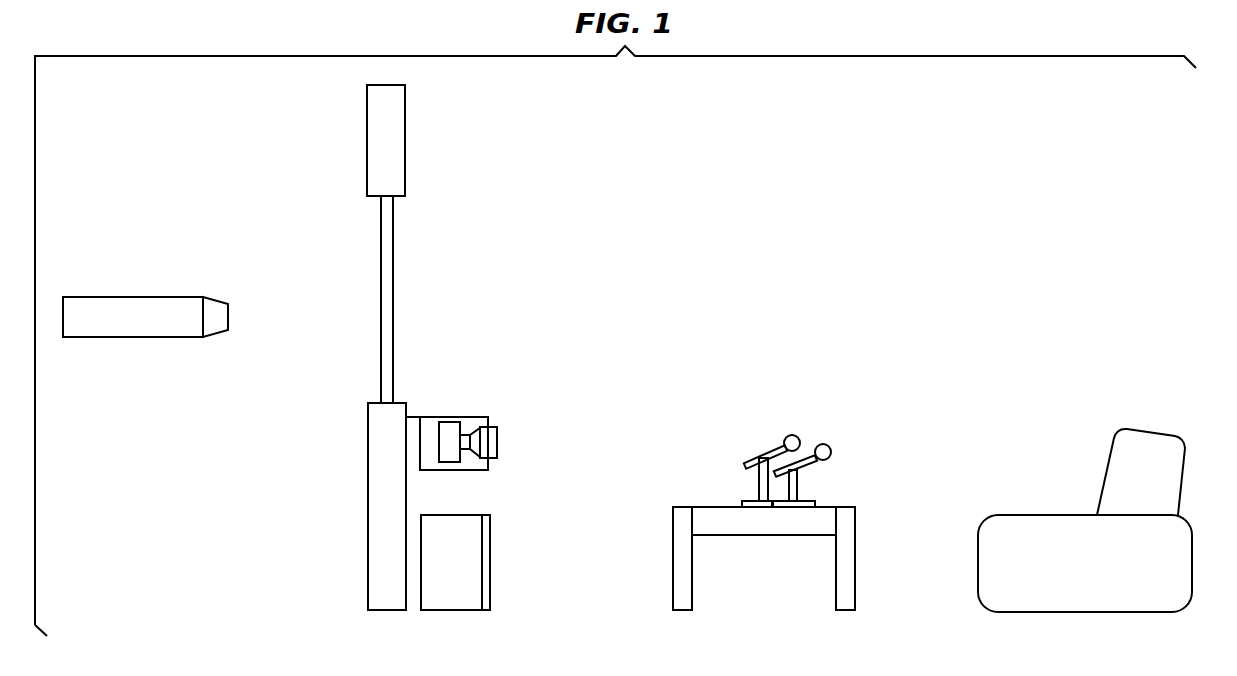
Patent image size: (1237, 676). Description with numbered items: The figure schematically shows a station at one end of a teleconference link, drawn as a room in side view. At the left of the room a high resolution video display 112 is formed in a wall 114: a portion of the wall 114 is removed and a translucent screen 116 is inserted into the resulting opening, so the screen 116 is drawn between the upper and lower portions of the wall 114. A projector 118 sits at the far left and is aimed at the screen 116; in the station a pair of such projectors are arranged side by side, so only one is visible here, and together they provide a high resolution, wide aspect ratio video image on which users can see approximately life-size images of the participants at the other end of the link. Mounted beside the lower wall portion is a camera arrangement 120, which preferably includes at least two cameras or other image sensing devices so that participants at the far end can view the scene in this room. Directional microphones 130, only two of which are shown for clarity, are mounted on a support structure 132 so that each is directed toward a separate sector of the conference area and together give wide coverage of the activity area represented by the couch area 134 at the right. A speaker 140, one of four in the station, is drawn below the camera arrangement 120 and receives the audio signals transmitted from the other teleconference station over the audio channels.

The high resolution video display 112 is at (446, 256).
The wall 114 is at (368, 530).
The translucent screen 116 is at (370, 240).
The projector 118 is at (238, 302).
The camera arrangement 120 is at (440, 408).
The directional microphones 130 is at (806, 450).
The support structure 132 is at (856, 560).
The couch area 134 is at (1173, 563).
The speakers 140 is at (482, 620).